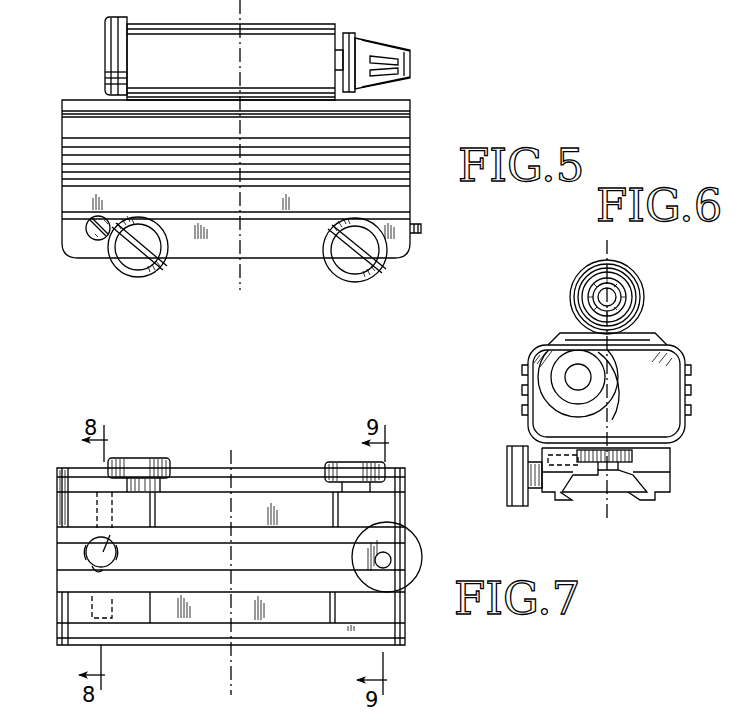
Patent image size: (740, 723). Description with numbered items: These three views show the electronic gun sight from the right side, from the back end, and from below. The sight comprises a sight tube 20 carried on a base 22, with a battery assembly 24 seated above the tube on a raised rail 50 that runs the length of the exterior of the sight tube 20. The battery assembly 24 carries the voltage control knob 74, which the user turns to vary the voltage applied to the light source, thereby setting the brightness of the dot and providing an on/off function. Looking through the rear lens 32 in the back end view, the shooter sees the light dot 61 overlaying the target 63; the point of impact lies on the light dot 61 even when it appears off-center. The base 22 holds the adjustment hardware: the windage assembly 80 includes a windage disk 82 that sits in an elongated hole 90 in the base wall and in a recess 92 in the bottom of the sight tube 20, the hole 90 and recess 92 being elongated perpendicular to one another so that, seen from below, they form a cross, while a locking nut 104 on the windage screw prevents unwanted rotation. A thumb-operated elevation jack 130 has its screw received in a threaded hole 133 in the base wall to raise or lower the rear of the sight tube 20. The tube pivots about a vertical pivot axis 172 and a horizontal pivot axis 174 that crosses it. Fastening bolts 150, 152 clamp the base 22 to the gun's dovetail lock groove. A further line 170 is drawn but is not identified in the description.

In FIG. 5, the sight tube 20 is at (236, 179).
In FIG. 6, the sight tube 20 is at (670, 356).
In FIG. 7, the sight tube 20 is at (280, 468).
In FIG. 6, the base 22 is at (670, 480).
In FIG. 6, the battery assembly 24 is at (592, 268).
In FIG. 6, the rear lens 32 is at (673, 430).
In FIG. 6, the raised rail 50 is at (580, 340).
In FIG. 6, the light dot 61 is at (563, 385).
In FIG. 6, the target 63 is at (630, 385).
In FIG. 6, the voltage control knob 74 is at (582, 290).
In FIG. 7, the windage assembly 80 is at (52, 577).
In FIG. 7, the windage disk 82 is at (100, 552).
In FIG. 7, the hole 90 is at (100, 570).
In FIG. 7, the recess 92 is at (118, 543).
In FIG. 5, the locking nut 104 is at (96, 240).
In FIG. 5, the elevation jack 130 is at (420, 230).
In FIG. 6, the elevation jack 130 is at (622, 476).
In FIG. 7, the elevation jack 130 is at (414, 548).
In FIG. 6, the threaded hole 133 is at (587, 492).
In FIG. 5, the fastening bolt 150 is at (372, 272).
In FIG. 6, the fastening bolt 150 is at (515, 508).
In FIG. 7, the fastening bolt 150 is at (385, 465).
In FIG. 5, the fastening bolt 152 is at (160, 268).
In FIG. 7, the fastening bolt 152 is at (155, 460).
In FIG. 6, the vertical centerline 170 is at (612, 262).
In FIG. 5, the vertical pivot axis 172 is at (240, 268).
In FIG. 7, the horizontal pivot axis 174 is at (232, 672).